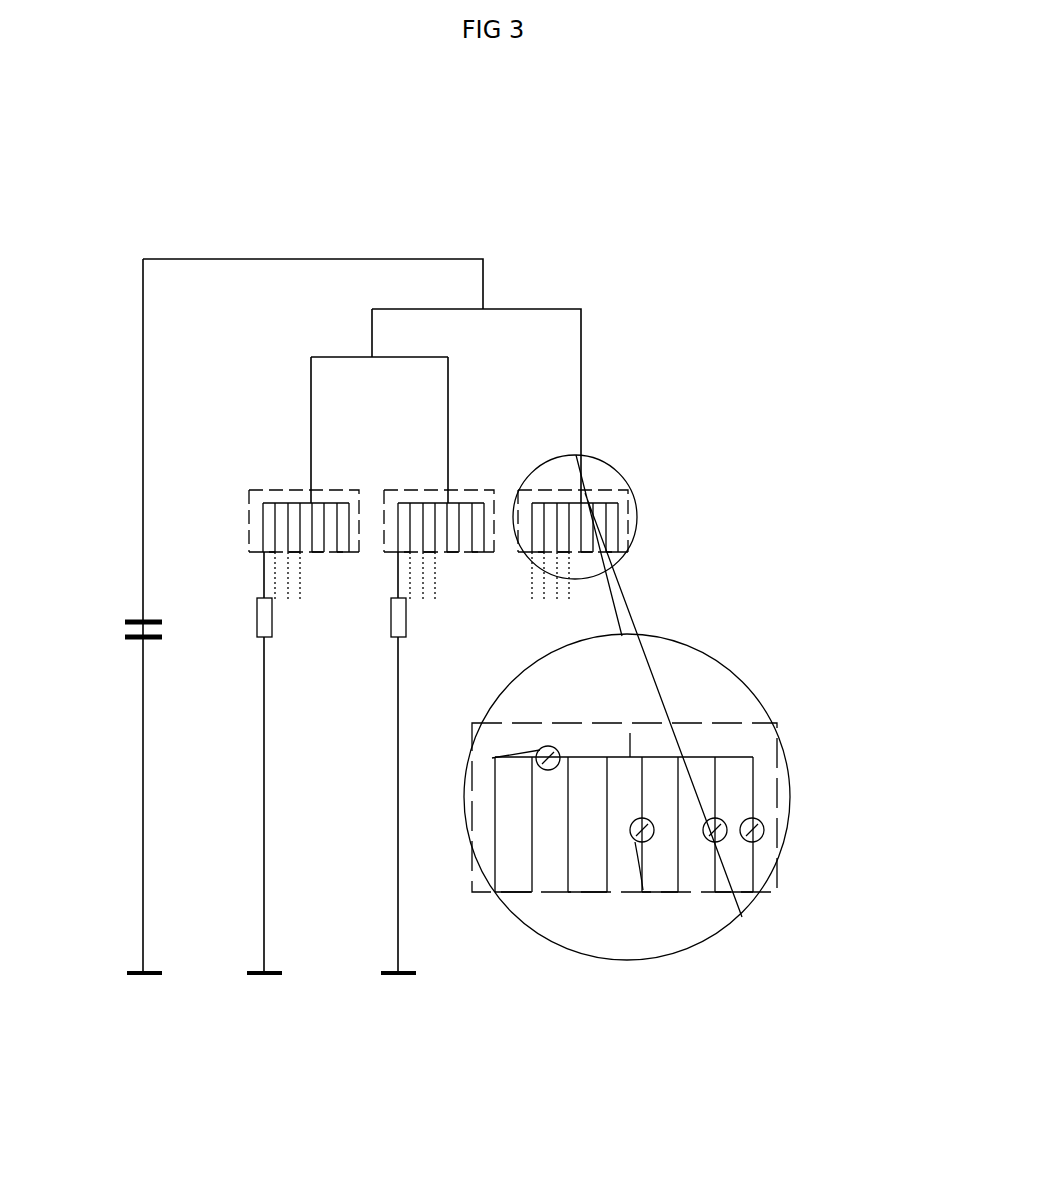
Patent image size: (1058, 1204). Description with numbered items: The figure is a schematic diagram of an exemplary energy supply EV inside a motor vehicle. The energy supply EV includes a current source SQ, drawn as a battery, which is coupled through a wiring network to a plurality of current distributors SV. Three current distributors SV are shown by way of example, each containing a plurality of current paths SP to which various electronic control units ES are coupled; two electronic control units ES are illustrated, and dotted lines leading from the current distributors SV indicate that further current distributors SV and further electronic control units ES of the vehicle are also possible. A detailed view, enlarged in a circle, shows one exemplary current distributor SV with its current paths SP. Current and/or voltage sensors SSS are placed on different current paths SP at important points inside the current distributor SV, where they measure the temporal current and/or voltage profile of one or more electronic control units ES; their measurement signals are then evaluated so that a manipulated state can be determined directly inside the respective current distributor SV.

The energy supply EV is at (626, 277).
The current source SQ is at (106, 669).
The electronic control unit ES is at (258, 630).
The current distributor SV is at (283, 487).
The current path SP is at (619, 520).
The current and/or voltage sensor SSS is at (548, 770).